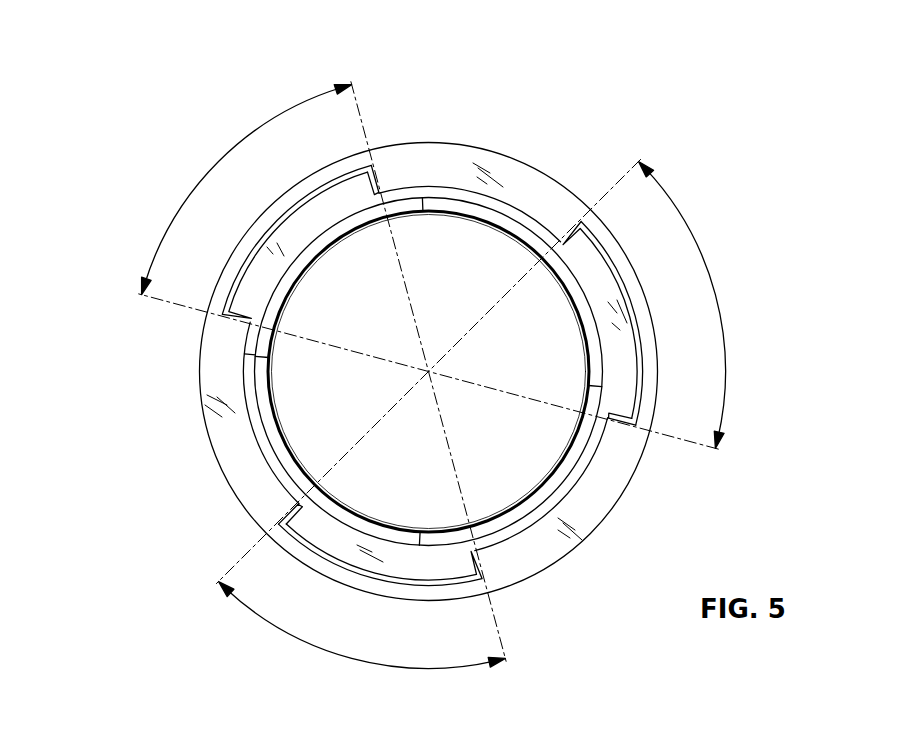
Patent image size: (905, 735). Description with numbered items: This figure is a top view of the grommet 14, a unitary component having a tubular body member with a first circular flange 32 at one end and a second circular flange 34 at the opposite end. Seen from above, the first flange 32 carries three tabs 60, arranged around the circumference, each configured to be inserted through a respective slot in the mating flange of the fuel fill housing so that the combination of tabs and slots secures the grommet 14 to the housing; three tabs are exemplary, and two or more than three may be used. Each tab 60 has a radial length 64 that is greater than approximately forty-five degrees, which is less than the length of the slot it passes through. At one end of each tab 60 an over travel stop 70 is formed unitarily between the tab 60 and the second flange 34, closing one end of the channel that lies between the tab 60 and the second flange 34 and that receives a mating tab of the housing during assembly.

The grommet 14 is at (187, 92).
The first circular flange 32 is at (247, 295).
The second circular flange 34 is at (490, 162).
The tab 60 is at (296, 203).
The radial length 64 is at (213, 168).
The over travel stop 70 is at (376, 168).